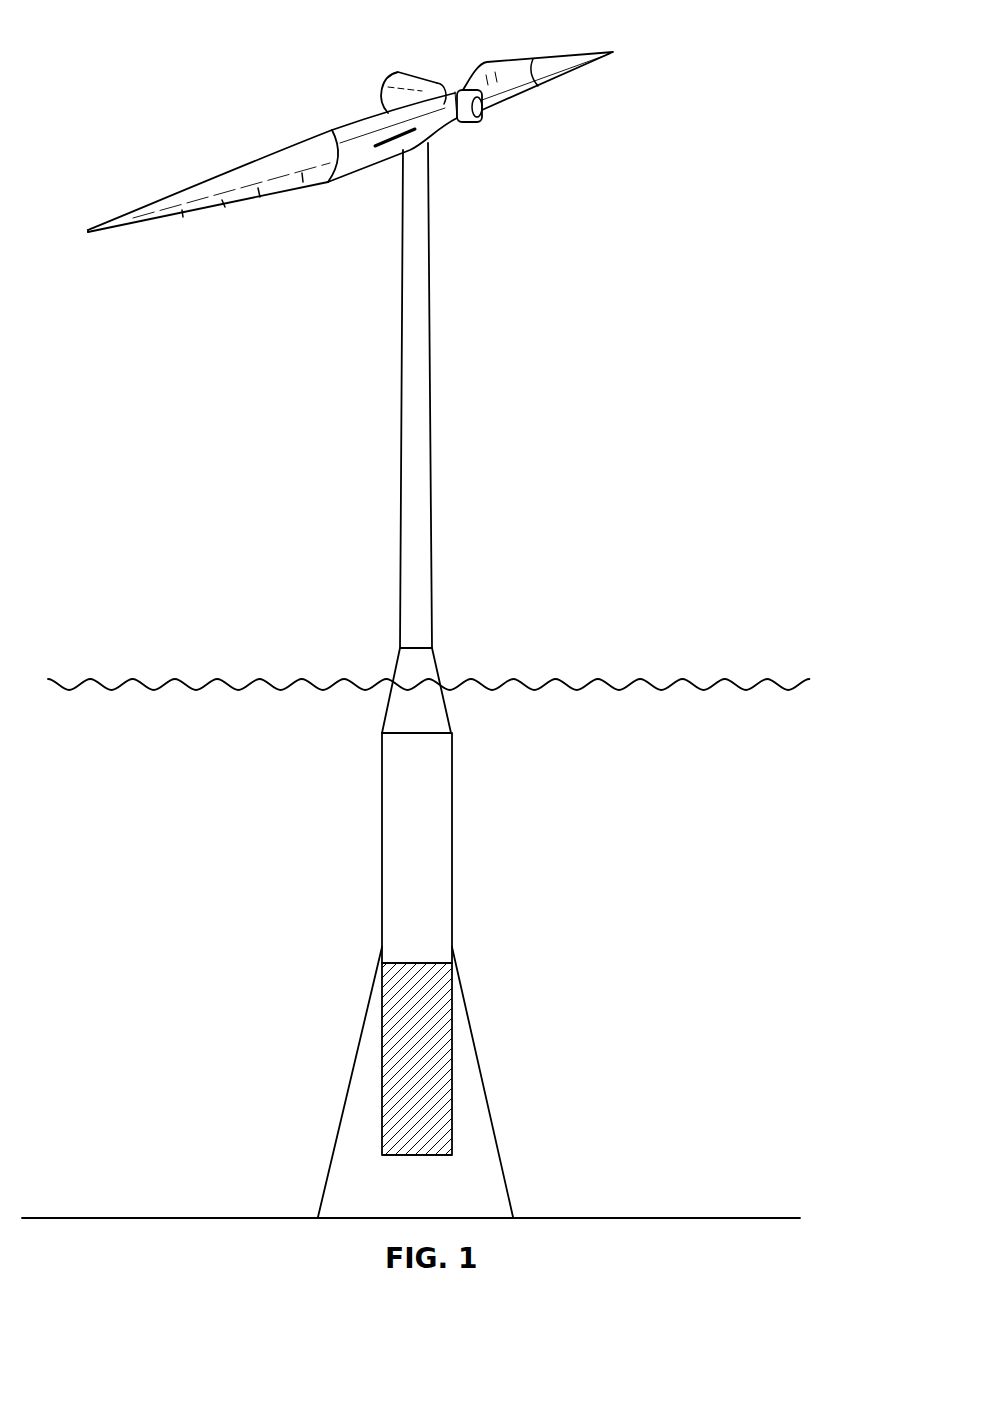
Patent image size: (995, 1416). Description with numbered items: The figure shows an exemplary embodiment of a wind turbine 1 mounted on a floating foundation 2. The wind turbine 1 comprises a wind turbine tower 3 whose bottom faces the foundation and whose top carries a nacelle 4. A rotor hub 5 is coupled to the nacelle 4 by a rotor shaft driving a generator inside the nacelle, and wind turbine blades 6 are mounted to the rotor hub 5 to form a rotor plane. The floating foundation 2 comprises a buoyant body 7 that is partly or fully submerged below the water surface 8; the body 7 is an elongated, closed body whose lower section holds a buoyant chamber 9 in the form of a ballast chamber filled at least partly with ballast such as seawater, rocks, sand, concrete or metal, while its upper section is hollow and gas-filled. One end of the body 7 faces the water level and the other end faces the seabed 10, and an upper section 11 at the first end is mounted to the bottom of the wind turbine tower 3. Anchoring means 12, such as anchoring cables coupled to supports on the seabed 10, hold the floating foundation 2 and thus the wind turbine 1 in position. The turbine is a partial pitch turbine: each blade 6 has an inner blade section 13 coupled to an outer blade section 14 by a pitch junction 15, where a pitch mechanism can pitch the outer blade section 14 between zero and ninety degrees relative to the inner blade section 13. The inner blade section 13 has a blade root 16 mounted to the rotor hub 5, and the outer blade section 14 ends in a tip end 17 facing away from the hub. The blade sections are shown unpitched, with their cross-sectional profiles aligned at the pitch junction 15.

The wind turbine 1 is at (392, 425).
The floating foundation 2 is at (379, 863).
The wind turbine tower 3 is at (422, 355).
The nacelle 4 is at (403, 78).
The rotor hub 5 is at (482, 117).
The wind turbine blade 6 is at (531, 48).
The buoyant body 7 is at (440, 850).
The water surface 8 is at (598, 680).
The buoyant chamber 9 is at (440, 1012).
The seabed 10 is at (618, 1217).
The upper section 11 is at (430, 672).
The anchoring means 12 is at (340, 1108).
The inner blade section 13 is at (360, 162).
The outer blade section 14 is at (227, 200).
The pitch junction 15 is at (329, 127).
The blade root 16 is at (456, 121).
The tip end 17 is at (88, 229).